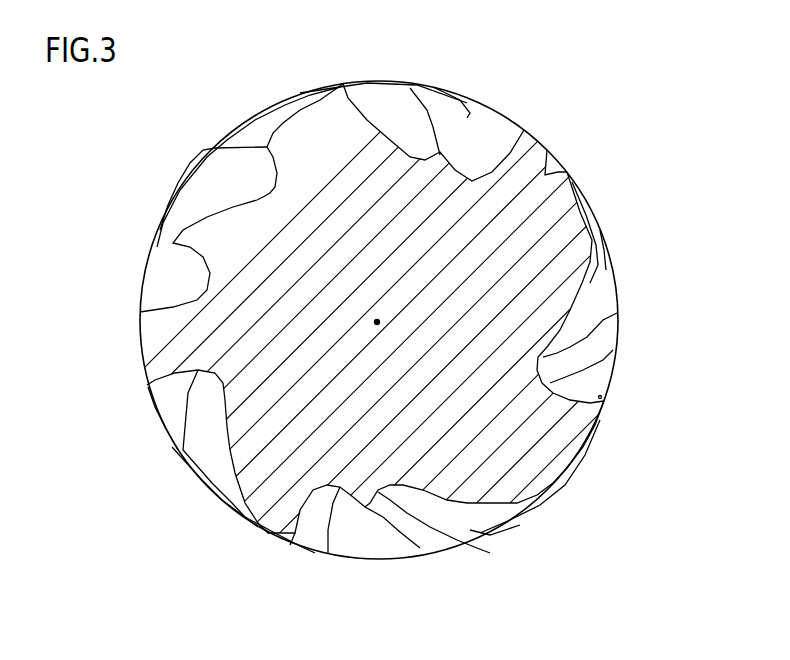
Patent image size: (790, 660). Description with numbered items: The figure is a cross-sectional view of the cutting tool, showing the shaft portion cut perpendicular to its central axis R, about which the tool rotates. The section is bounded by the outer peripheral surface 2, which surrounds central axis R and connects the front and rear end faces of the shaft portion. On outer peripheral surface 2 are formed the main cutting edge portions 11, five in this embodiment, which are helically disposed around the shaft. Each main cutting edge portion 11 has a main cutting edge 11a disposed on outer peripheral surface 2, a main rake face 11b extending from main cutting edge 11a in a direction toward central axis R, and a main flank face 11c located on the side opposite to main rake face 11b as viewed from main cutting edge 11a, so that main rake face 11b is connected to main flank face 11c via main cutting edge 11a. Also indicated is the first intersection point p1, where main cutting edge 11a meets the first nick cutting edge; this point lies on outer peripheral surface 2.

The outer peripheral surface 2 is at (274, 535).
The main cutting edge portion 11 is at (547, 427).
The main cutting edge 11a is at (267, 147).
The main rake face 11b is at (595, 386).
The main flank face 11c is at (597, 250).
The first intersection point p1 is at (600, 397).
The central axis R is at (377, 322).